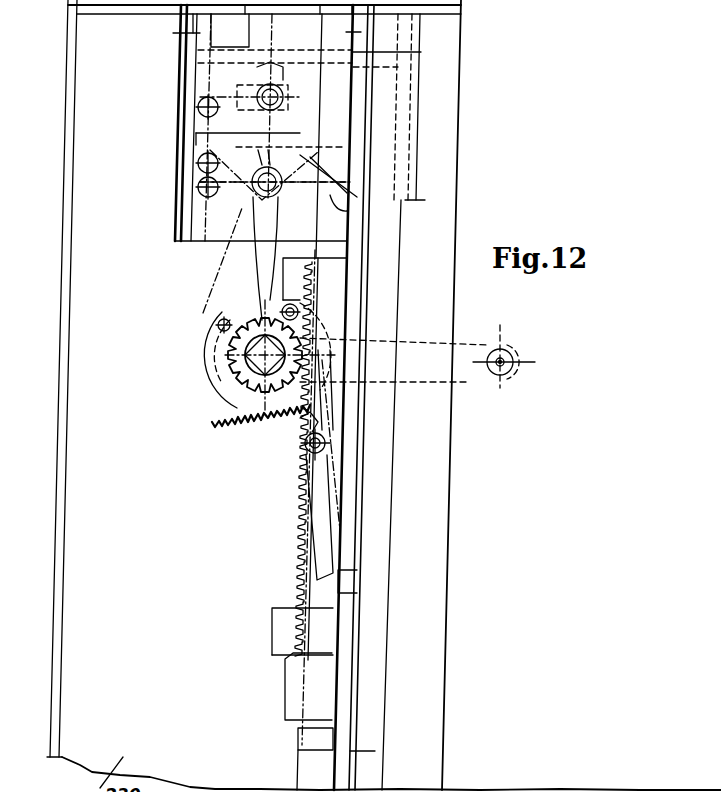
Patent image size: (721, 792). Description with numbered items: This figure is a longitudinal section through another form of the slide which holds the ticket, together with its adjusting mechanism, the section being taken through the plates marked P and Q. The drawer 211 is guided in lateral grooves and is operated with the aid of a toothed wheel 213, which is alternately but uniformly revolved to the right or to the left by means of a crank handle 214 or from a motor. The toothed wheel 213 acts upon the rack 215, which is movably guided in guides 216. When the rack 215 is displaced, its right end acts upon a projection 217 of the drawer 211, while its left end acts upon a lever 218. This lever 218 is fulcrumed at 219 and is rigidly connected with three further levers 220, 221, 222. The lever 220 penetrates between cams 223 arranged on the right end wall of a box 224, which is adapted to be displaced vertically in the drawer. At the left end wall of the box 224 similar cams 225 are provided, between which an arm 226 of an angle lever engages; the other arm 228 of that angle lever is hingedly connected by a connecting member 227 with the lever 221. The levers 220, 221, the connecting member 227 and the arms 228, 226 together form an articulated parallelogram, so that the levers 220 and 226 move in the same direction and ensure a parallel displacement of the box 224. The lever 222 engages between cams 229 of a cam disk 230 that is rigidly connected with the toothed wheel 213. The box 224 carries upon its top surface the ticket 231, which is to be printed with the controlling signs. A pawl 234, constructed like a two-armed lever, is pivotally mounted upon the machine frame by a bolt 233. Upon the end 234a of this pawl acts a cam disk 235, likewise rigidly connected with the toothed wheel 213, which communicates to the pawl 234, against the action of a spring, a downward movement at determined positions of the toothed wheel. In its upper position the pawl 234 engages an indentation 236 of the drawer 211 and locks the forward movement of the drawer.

The side plate P is at (98, 117).
The frame plate Q is at (390, 127).
The drawer 211 is at (350, 492).
The toothed wheel 213 is at (232, 355).
The crank handle 214 is at (466, 371).
The rack 215 is at (313, 690).
The guides 216 is at (312, 275).
The projection 217 is at (300, 738).
The lever 218 is at (322, 178).
The fulcrum 219 is at (243, 200).
The lever 220 is at (207, 163).
The lever 221 is at (195, 205).
The lever 222 is at (243, 263).
The cams 223 is at (258, 148).
The box 224 is at (405, 120).
The cams 225 is at (257, 66).
The arm 226 is at (272, 70).
The connecting member 227 is at (205, 133).
The arm 228 is at (203, 100).
The cams 229 is at (218, 325).
The cam disk 230 is at (228, 388).
The ticket 231 is at (422, 82).
The bolt 233 is at (303, 453).
The pawl 234 is at (325, 538).
The end of pawl 234a is at (303, 428).
The cam disk 235 is at (236, 400).
The indentation 236 is at (343, 570).